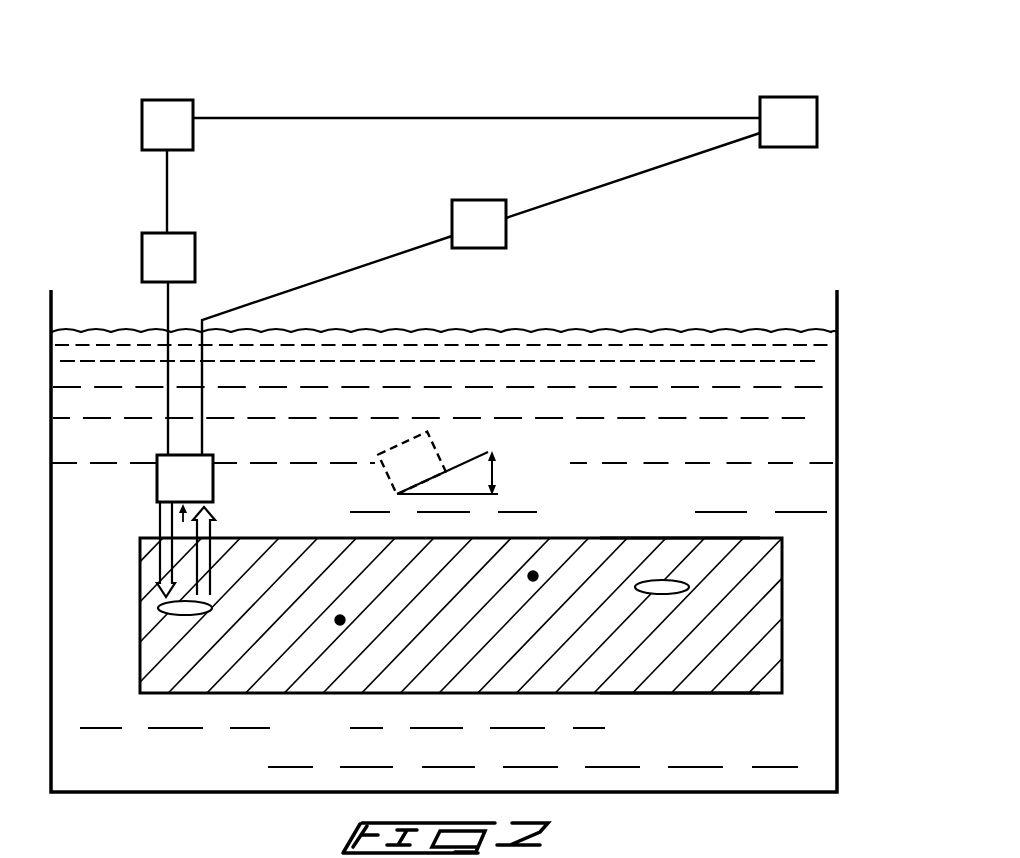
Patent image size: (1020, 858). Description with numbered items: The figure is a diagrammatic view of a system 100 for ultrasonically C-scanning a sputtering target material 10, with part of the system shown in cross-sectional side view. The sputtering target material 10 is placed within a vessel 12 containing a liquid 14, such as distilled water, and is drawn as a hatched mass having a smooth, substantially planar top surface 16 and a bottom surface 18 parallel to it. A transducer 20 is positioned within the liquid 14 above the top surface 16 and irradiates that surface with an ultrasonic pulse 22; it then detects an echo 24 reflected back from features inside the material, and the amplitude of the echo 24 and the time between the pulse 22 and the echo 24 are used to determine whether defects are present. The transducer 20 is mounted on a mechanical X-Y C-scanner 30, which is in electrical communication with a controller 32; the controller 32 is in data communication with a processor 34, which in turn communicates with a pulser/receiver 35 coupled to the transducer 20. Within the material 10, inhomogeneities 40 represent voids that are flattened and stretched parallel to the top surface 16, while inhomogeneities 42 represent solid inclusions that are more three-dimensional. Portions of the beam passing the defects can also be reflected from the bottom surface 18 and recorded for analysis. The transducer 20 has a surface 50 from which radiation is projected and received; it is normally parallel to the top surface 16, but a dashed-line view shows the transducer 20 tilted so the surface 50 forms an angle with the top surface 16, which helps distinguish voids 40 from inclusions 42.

The system 100 is at (731, 60).
The sputtering target material 10 is at (750, 632).
The vessel 12 is at (838, 397).
The liquid 14 is at (808, 485).
The top surface 16 is at (677, 528).
The bottom surface 18 is at (657, 700).
The transducer 20 is at (339, 467).
The ultrasonic pulse 22 is at (146, 530).
The echo 24 is at (224, 531).
The mechanical X-Y C-scanner 30 is at (168, 302).
The controller 32 is at (451, 125).
The processor 34 is at (788, 122).
The pulser/receiver 35 is at (481, 294).
The inhomogeneities (voids) 40 is at (183, 612).
The inhomogeneities (inclusions) 42 is at (340, 622).
The surface of transducer 50 is at (162, 522).